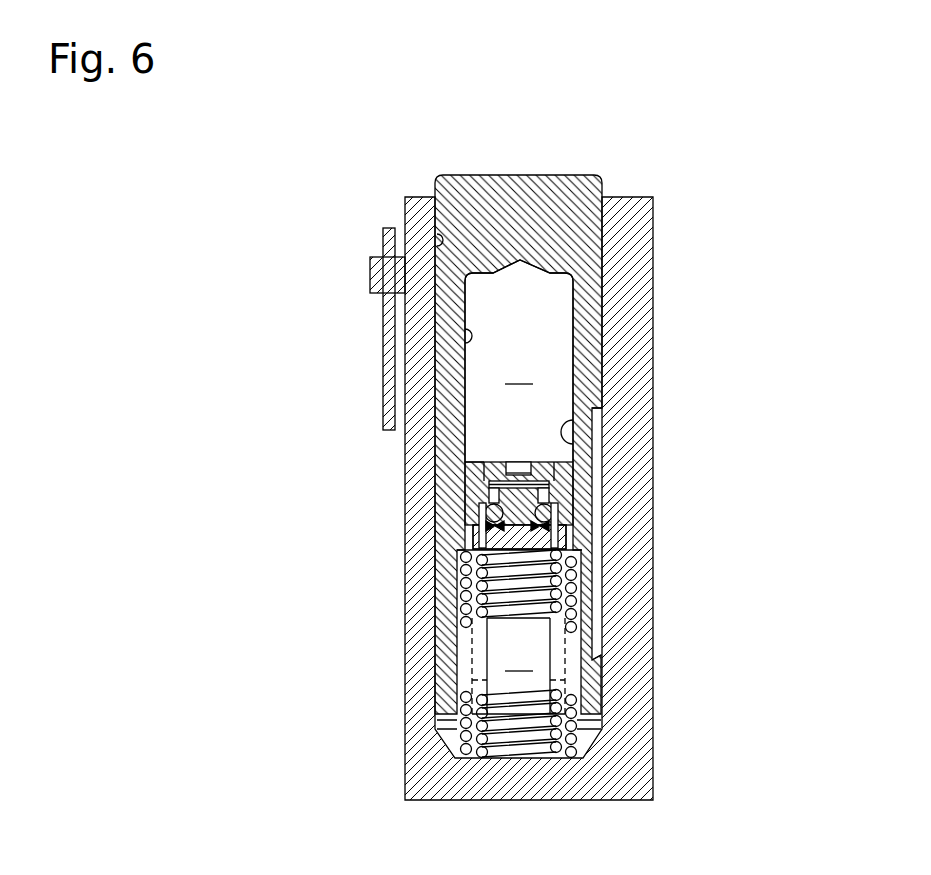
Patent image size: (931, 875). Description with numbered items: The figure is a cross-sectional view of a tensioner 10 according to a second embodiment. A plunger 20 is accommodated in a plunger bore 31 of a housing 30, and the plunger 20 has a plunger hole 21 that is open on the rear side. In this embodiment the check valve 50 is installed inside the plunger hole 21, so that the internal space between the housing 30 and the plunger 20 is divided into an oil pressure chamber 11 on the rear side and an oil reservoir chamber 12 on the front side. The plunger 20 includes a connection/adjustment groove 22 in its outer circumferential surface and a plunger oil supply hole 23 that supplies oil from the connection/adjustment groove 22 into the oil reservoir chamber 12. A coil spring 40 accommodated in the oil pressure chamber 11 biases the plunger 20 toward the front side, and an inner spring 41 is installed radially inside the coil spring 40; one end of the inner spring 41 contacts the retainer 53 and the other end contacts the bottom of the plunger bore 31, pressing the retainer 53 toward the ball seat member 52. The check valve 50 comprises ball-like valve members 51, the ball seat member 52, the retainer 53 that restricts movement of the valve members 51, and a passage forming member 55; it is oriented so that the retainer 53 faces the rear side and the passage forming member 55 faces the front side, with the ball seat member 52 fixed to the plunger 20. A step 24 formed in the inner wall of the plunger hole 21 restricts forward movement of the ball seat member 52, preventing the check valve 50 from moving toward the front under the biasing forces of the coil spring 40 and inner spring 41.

The tensioner 10 is at (318, 157).
The plunger 20 is at (523, 204).
The housing 30 is at (630, 264).
The plunger bore 31 is at (382, 258).
The plunger hole 21 is at (465, 342).
The connection/adjustment groove 22 is at (598, 438).
The plunger oil supply hole 23 is at (577, 420).
The step 24 is at (465, 462).
The oil reservoir chamber 12 is at (519, 361).
The oil pressure chamber 11 is at (518, 666).
The coil spring 40 is at (466, 568).
The inner spring 41 is at (473, 601).
The check valve 50 is at (653, 535).
The valve members 51 is at (504, 523).
The ball seat member 52 is at (565, 487).
The retainer 53 is at (575, 574).
The passage forming member 55 is at (555, 467).